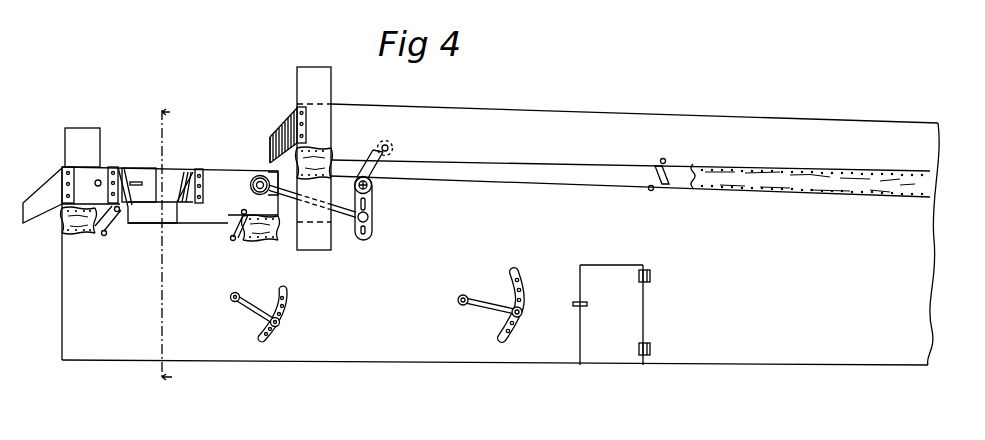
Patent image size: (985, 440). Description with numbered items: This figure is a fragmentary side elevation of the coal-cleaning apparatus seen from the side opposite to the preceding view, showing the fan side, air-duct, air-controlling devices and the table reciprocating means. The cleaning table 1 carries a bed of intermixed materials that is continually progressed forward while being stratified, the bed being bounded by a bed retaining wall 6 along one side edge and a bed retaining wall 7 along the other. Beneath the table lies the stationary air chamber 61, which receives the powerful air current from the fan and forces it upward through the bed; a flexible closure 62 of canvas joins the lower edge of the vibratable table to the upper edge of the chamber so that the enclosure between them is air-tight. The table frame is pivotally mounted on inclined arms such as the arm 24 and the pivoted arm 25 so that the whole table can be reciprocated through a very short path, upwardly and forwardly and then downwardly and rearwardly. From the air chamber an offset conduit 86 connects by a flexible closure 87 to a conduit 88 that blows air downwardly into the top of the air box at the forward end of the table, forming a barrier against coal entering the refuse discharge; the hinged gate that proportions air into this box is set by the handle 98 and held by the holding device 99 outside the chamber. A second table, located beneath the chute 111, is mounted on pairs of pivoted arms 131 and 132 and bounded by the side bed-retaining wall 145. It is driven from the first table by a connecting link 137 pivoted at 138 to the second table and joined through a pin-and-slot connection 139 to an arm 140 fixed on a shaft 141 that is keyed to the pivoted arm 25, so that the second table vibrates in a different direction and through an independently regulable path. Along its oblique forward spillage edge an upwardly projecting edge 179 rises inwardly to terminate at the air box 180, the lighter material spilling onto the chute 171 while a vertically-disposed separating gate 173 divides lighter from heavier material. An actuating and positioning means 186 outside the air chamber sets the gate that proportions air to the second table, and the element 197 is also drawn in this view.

The cleaning table 1 is at (598, 107).
The bed retaining wall 6 is at (733, 129).
The bed retaining wall 7 is at (164, 248).
The arm 24 is at (654, 175).
The pivoted arm 25 is at (380, 168).
The stationary air chamber 61 is at (907, 257).
The flexible closure 62 is at (865, 178).
The offset conduit 86 is at (322, 231).
The flexible closure 87 is at (325, 158).
The conduit 88 is at (323, 127).
The handle 98 is at (490, 303).
The holding device 99 is at (523, 295).
The chute 111 is at (287, 132).
The pivoted arm 131 is at (240, 222).
The pivoted arm 132 is at (115, 236).
The connecting link 137 is at (344, 216).
The pivot 138 is at (270, 175).
The pin-and-slot connection 139 is at (368, 216).
The arm 140 is at (369, 232).
The shaft 141 is at (373, 186).
The side bed-retaining wall 145 is at (222, 172).
The chute 171 is at (143, 214).
The separating gate 173 is at (137, 178).
The upwardly projecting edge 179 is at (167, 196).
The air box 180 is at (70, 140).
The actuating and positioning means 186 is at (270, 322).
The plate 197 is at (42, 203).